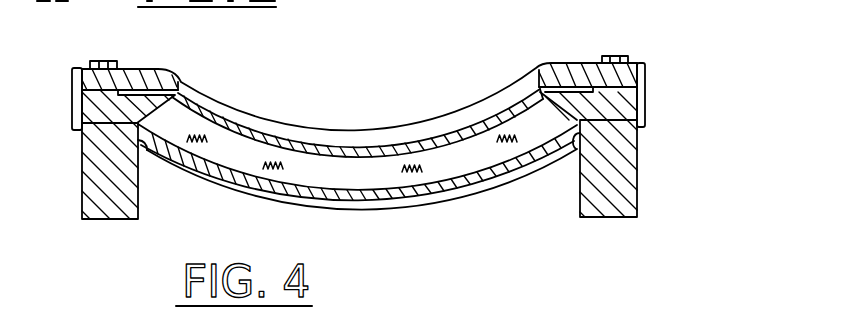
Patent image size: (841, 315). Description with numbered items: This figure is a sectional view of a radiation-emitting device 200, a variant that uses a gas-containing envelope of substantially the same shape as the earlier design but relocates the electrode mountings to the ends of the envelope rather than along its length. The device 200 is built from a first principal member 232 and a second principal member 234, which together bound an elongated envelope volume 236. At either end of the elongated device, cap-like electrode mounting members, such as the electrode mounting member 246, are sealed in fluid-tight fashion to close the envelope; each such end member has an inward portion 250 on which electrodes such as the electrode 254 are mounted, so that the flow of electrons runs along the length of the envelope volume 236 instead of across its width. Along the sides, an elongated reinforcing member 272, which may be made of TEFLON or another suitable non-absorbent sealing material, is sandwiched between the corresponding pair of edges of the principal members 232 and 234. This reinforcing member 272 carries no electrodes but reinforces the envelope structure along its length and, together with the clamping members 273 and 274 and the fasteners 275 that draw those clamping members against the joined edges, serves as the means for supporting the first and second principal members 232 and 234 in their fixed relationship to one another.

The radiation-emitting device 200 is at (556, 219).
The first principal member 232 is at (237, 124).
The second principal member 234 is at (352, 201).
The envelope volume 236 is at (327, 168).
The electrode mounting member 246 is at (287, 130).
The inward portion 250 is at (447, 163).
The electrode 254 is at (414, 173).
The elongated reinforcing member 272 is at (112, 92).
The clamping member 273 is at (569, 77).
The clamping member 274 is at (93, 85).
The fastener 275 is at (617, 56).